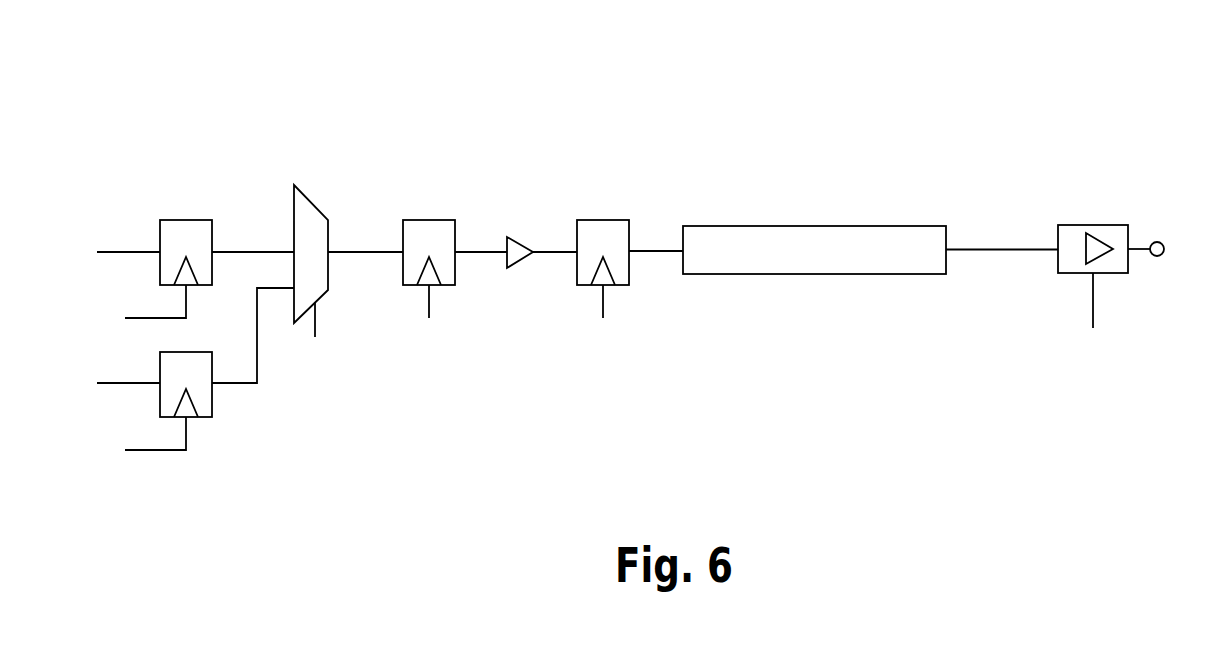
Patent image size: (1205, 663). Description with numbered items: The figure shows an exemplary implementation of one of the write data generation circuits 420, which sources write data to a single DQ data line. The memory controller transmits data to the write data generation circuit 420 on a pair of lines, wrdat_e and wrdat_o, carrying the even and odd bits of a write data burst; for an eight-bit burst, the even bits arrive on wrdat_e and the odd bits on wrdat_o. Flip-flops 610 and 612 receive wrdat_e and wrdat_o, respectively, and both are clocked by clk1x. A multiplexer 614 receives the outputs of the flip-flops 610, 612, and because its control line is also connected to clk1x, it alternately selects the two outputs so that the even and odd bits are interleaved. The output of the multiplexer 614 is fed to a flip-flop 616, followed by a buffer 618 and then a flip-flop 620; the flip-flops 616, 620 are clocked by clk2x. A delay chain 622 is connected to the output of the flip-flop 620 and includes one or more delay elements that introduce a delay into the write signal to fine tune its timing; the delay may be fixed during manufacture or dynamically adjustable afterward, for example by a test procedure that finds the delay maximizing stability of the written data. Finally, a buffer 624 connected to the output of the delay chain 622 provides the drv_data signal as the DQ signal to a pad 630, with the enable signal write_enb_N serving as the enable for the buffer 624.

The write data generation circuit 420 is at (165, 50).
The flip-flop 610 is at (209, 201).
The flip-flop 612 is at (207, 417).
The multiplexer 614 is at (313, 172).
The flip-flop 616 is at (442, 220).
The buffer 618 is at (517, 238).
The flip-flop 620 is at (617, 219).
The delay chain 622 is at (830, 226).
The buffer 624 is at (1112, 207).
The pad 630 is at (1172, 226).